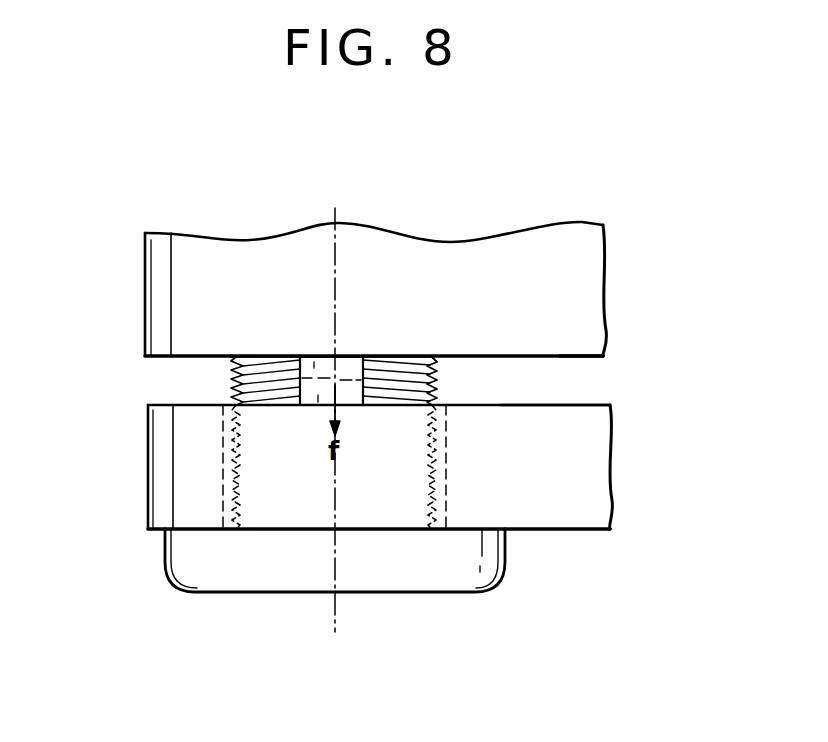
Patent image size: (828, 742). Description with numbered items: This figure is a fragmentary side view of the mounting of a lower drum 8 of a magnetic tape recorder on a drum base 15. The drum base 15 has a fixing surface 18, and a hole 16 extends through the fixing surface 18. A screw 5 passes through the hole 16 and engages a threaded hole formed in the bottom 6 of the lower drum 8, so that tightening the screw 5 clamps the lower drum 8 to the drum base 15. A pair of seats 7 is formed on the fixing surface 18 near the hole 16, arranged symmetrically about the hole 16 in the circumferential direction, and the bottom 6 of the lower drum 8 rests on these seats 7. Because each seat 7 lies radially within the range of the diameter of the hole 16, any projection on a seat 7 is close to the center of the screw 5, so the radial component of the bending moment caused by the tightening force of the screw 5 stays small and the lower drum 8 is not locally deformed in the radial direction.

The screw 5 is at (412, 573).
The bottom 6 is at (583, 358).
The seat 7 is at (318, 365).
The lower drum 8 is at (583, 286).
The drum base 15 is at (550, 505).
The hole 16 is at (221, 446).
The fixing surface 18 is at (583, 405).